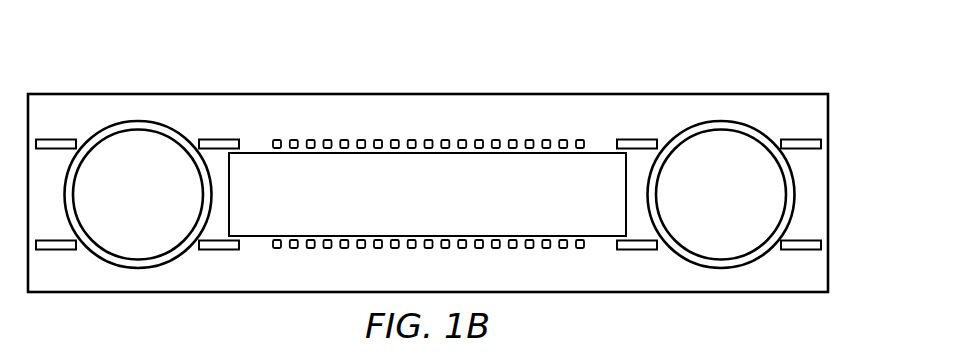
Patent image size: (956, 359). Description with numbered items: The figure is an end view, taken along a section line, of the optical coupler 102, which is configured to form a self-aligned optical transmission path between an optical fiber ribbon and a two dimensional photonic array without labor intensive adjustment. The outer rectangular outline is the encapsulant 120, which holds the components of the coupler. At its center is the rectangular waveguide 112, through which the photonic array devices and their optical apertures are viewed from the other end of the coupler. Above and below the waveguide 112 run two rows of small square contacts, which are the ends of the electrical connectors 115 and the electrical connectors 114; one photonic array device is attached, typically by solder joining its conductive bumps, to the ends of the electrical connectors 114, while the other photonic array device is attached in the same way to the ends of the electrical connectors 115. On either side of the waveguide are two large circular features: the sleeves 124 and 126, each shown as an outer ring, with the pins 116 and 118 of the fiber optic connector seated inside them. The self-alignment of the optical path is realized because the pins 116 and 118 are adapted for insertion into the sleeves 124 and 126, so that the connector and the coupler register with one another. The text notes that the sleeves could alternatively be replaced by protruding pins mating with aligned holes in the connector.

The optical coupler 102 is at (428, 153).
The waveguide 112 is at (263, 153).
The electrical connectors 114 is at (580, 249).
The electrical connectors 115 is at (580, 139).
The pin 116 is at (157, 208).
The pin 118 is at (739, 208).
The encapsulant 120 is at (425, 94).
The sleeve 124 is at (133, 121).
The sleeve 126 is at (718, 121).